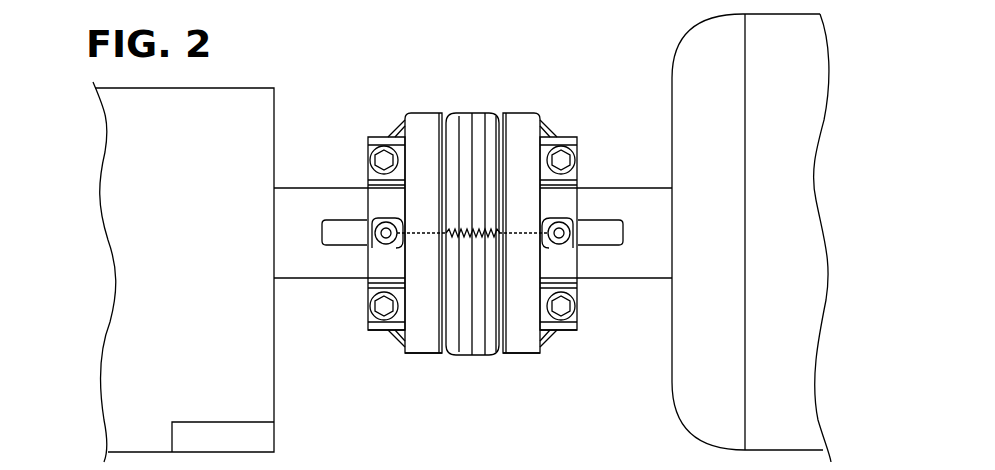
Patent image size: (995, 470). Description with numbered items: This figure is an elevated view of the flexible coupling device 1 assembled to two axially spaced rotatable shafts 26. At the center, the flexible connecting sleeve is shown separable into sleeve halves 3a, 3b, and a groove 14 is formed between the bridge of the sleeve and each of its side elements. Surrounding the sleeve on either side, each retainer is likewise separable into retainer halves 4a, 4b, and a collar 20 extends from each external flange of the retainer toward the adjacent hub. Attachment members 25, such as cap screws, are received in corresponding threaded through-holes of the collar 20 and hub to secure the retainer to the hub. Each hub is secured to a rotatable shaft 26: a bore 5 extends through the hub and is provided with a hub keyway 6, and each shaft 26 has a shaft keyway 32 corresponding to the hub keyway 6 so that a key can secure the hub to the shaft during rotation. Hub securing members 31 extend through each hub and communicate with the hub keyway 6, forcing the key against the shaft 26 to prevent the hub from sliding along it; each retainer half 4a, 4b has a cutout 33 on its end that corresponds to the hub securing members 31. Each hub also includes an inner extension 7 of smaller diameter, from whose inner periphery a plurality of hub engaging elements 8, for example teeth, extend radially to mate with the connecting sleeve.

The flexible coupling device 1 is at (328, 36).
The sleeve half 3a is at (474, 347).
The sleeve half 3b is at (485, 116).
The retainer half 4a is at (422, 347).
The retainer half 4b is at (408, 117).
The bore 5 is at (385, 135).
The hub keyway 6 is at (424, 107).
The inner extension 7 is at (471, 83).
The hub engaging element 8 is at (250, 262).
The groove 14 is at (418, 122).
The collar 20 is at (378, 335).
The attachment member 25 is at (381, 160).
The rotatable shaft 26 is at (288, 273).
The hub securing member 31 is at (376, 242).
The shaft keyway 32 is at (338, 226).
The cutout 33 is at (374, 228).